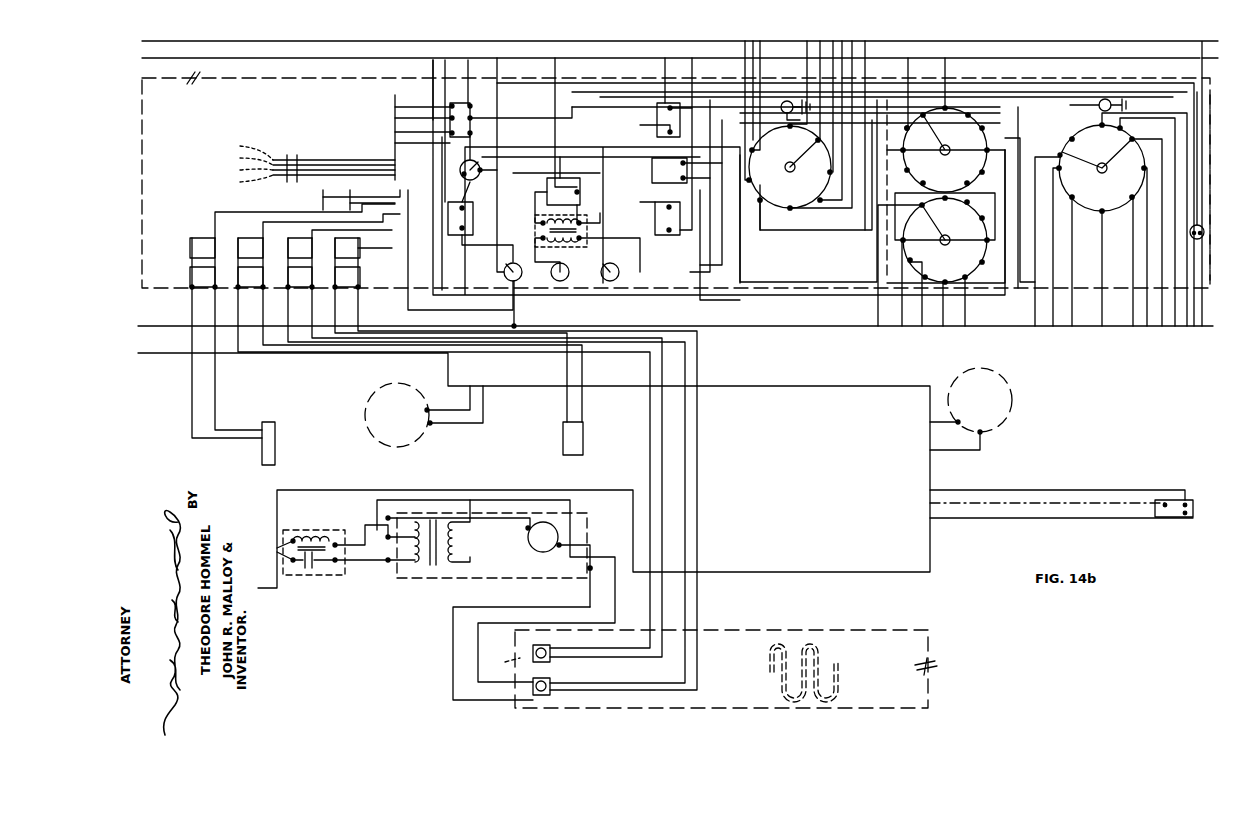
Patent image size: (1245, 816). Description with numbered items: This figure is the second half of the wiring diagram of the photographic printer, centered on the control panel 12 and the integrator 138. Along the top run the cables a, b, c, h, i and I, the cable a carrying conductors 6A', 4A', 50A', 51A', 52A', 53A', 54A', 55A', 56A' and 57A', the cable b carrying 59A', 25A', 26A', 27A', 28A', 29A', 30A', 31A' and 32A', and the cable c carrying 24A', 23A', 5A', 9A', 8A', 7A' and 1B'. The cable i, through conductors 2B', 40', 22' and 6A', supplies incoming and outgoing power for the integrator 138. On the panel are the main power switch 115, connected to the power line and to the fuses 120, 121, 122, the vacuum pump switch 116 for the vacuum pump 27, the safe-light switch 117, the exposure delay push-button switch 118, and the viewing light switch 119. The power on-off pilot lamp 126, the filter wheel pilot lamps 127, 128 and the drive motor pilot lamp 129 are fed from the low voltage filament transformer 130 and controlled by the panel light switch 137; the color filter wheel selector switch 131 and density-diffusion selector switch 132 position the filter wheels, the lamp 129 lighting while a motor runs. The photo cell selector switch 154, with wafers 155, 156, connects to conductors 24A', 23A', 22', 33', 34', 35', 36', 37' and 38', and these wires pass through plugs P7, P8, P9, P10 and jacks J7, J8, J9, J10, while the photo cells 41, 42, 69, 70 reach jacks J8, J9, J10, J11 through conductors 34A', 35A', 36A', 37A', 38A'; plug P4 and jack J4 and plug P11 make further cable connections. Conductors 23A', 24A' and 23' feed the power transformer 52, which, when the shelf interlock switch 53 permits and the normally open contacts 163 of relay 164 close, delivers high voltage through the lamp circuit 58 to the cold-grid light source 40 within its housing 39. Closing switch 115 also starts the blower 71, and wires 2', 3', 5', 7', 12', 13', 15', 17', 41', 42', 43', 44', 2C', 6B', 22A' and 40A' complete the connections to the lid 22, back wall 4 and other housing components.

The integrator 138 is at (244, 78).
The panel light switch 137 is at (450, 103).
The viewing light switch 119 is at (660, 103).
The power on-off pilot lamp 126 is at (460, 172).
The filter wheel pilot lamp 127 is at (790, 101).
The filter wheel pilot lamp 128 is at (1110, 100).
The drive motor pilot lamp 129 is at (1204, 228).
The low voltage filament transformer 130 is at (580, 231).
The color filter wheel selector switch 131 is at (752, 185).
The density-diffusion selector switch 132 is at (1072, 139).
The wafer 155 is at (975, 115).
The photo cell selector switch 154 is at (1012, 122).
The wafer 156 is at (905, 262).
The main power switch 115 is at (470, 232).
The vacuum pump switch 116 is at (542, 190).
The safe-light switch 117 is at (645, 236).
The exposure delay push-button switch 118 is at (652, 172).
The fuse 120 is at (508, 282).
The fuse 121 is at (560, 281).
The fuse 122 is at (610, 272).
The control panel 12 is at (1221, 187).
The lid 22 is at (950, 191).
The vacuum pump 27 is at (372, 395).
The photo electric cell 70 is at (275, 456).
The photo electric cell 69 is at (583, 453).
The blower 71 is at (1012, 402).
The lamp 58 is at (622, 597).
The shelf interlock switch 53 is at (1195, 497).
The power transformer 52 is at (397, 578).
The normally open contacts 163 is at (316, 570).
The relay 164 is at (308, 565).
The photo cell 41 is at (482, 649).
The photo cell 42 is at (525, 709).
The heater housing 39 is at (928, 630).
The cold-grid light source 40 is at (807, 650).
The back wall 4 is at (486, 173).
The cable a is at (142, 43).
The cable b is at (140, 328).
The cable c is at (142, 60).
The cable h is at (140, 355).
The cable i is at (985, 318).
The cable I is at (395, 100).
The plug P4 is at (293, 155).
The jack J4 is at (312, 155).
The plug P7 is at (321, 196).
The jack J7 is at (358, 196).
The plug P8 is at (347, 248).
The plug P9 is at (300, 248).
The plug P10 is at (253, 248).
The plug P11 is at (204, 248).
The jack J8 is at (347, 277).
The jack J9 is at (300, 277).
The jack J10 is at (250, 277).
The jack J11 is at (203, 277).
The wire 2' is at (617, 353).
The conductor 3' is at (446, 243).
The wire 5' is at (1047, 470).
The wire 7' is at (494, 405).
The conductor 12' is at (738, 552).
The conductor 13' is at (1062, 487).
The conductor 15' is at (361, 570).
The conductor 17' is at (840, 174).
The conductor 22' is at (638, 157).
The conductor 23' is at (320, 519).
The wire 33' is at (662, 253).
The wire 34' is at (660, 287).
The wire 35' is at (622, 278).
The wire 36' is at (627, 270).
The wire 37' is at (568, 263).
The conductor 38' is at (280, 224).
The conductor 40' is at (361, 133).
The conductor 41' is at (794, 154).
The conductor 42' is at (699, 165).
The conductor 43' is at (500, 669).
The conductor 44' is at (534, 631).
The conductor 1B' is at (456, 147).
The conductor 2B' is at (430, 113).
The conductor 2C' is at (254, 163).
The conductor 6B' is at (254, 153).
The conductor 4A' is at (583, 184).
The conductor 5A' is at (477, 174).
The conductor 6A' is at (667, 180).
The conductor 7A' is at (563, 133).
The conductor 8A' is at (700, 154).
The conductor 9A' is at (676, 97).
The conductor 22A' is at (252, 178).
The conductor 23A' is at (963, 83).
The conductor 24A' is at (817, 117).
The conductor 25A' is at (1147, 219).
The conductor 26A' is at (1158, 236).
The conductor 27A' is at (1154, 248).
The conductor 28A' is at (1126, 259).
The conductor 29A' is at (1117, 267).
The conductor 30A' is at (1118, 269).
The conductor 31A' is at (1086, 262).
The conductor 32A' is at (1052, 251).
The conductor 34A' is at (515, 472).
The conductor 35A' is at (473, 453).
The conductor 36A' is at (427, 330).
The conductor 37A' is at (226, 335).
The conductor 38A' is at (426, 460).
The conductor 40A' is at (252, 142).
The conductor 50A' is at (774, 97).
The conductor 51A' is at (797, 81).
The conductor 52A' is at (822, 80).
The conductor 53A' is at (840, 99).
The conductor 54A' is at (866, 104).
The conductor 55A' is at (858, 118).
The conductor 56A' is at (832, 135).
The conductor 57A' is at (746, 112).
The conductor 59A' is at (720, 252).